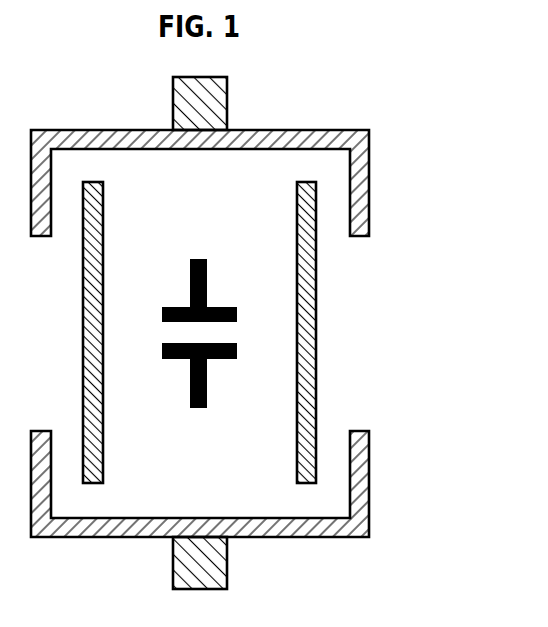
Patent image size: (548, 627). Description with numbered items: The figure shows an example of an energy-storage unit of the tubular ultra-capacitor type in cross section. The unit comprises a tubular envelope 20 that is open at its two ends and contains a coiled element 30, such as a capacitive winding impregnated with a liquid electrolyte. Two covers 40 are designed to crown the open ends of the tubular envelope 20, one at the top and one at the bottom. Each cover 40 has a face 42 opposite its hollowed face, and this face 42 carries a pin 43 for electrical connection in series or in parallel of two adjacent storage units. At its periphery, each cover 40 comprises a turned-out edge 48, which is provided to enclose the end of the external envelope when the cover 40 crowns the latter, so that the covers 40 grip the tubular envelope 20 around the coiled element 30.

The tubular envelope 20 is at (322, 325).
The coiled element 30 is at (197, 282).
The cover 40 is at (237, 335).
The face 42 is at (134, 137).
The pin 43 is at (212, 102).
The turned-out edge 48 is at (361, 187).